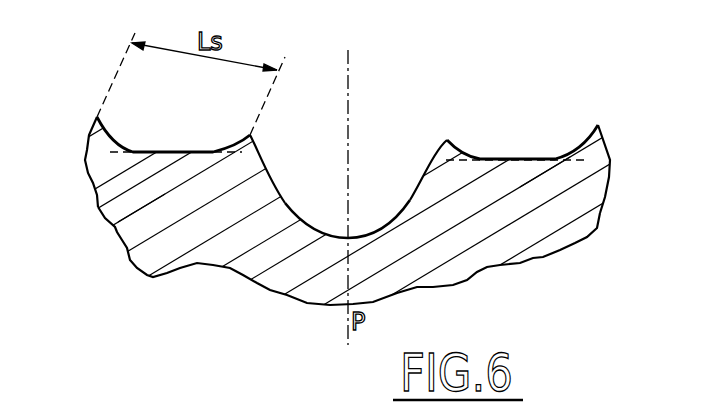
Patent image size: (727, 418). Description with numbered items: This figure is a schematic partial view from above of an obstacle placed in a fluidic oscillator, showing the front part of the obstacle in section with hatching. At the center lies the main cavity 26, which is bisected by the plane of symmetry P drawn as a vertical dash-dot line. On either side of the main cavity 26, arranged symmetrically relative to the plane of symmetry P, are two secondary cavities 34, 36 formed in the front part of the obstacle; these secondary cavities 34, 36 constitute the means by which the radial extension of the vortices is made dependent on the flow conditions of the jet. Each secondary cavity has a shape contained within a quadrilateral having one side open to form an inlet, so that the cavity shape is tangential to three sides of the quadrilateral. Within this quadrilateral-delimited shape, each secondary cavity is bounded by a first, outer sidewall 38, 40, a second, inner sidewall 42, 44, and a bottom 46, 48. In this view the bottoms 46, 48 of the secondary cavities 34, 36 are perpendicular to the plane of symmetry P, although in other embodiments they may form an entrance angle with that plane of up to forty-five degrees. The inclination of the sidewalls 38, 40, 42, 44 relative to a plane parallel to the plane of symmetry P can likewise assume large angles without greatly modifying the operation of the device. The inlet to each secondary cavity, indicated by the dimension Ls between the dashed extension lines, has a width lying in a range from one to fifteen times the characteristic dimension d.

The main cavity 26 is at (340, 205).
The secondary cavity 34 is at (520, 149).
The secondary cavity 36 is at (182, 142).
The first, outer sidewall 38 is at (588, 154).
The first, outer sidewall 40 is at (85, 152).
The second, inner sidewall 42 is at (452, 158).
The second, inner sidewall 44 is at (247, 153).
The bottom 46 is at (537, 158).
The bottom 48 is at (171, 157).